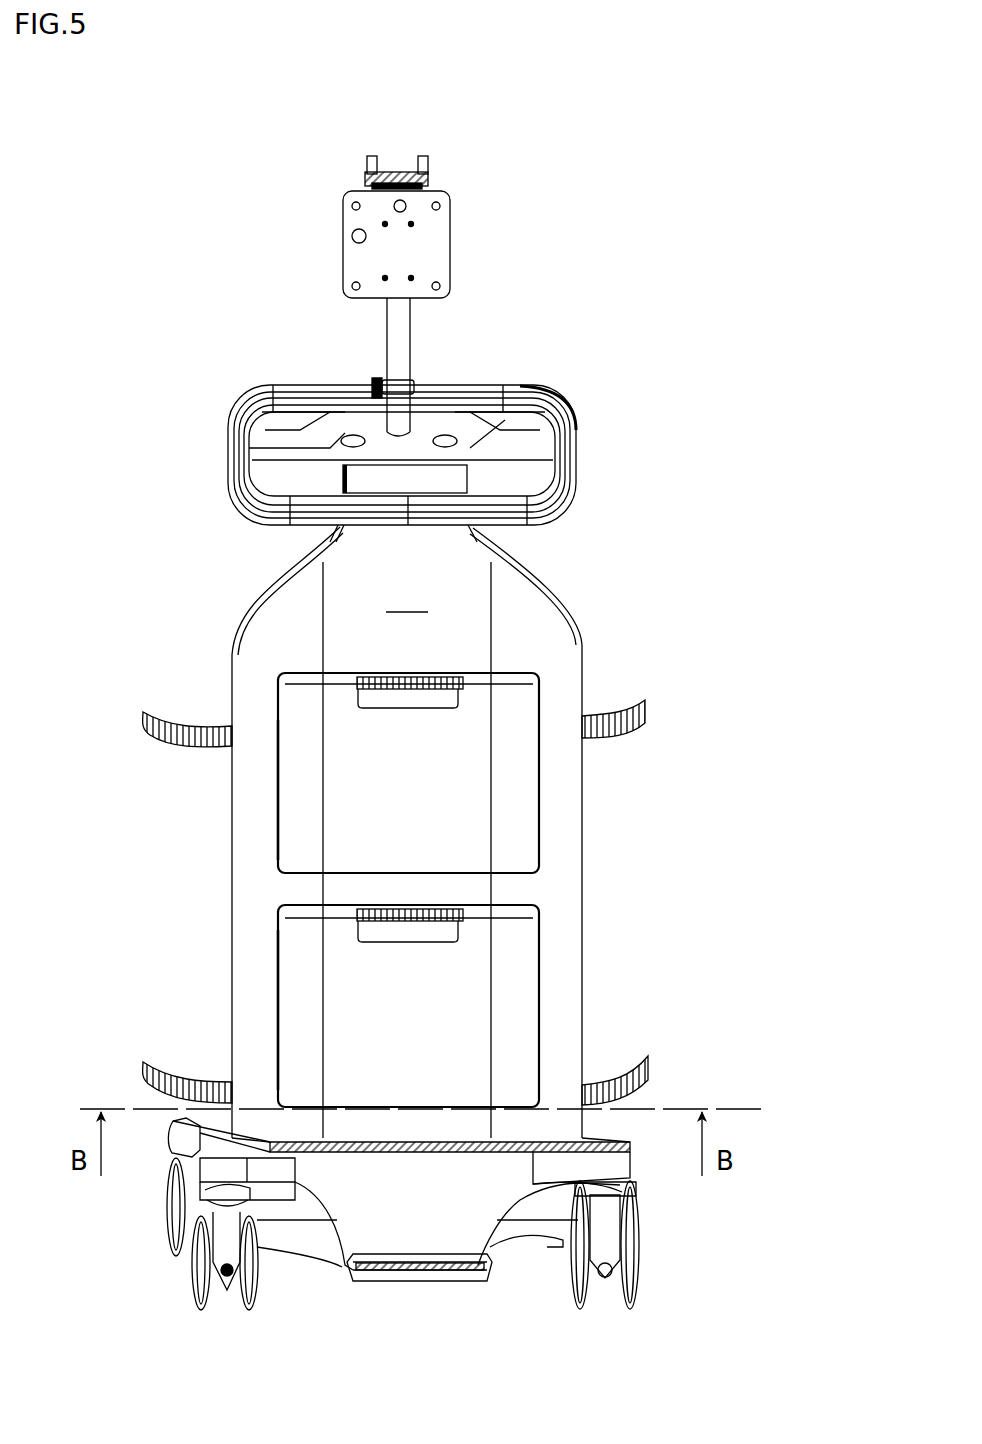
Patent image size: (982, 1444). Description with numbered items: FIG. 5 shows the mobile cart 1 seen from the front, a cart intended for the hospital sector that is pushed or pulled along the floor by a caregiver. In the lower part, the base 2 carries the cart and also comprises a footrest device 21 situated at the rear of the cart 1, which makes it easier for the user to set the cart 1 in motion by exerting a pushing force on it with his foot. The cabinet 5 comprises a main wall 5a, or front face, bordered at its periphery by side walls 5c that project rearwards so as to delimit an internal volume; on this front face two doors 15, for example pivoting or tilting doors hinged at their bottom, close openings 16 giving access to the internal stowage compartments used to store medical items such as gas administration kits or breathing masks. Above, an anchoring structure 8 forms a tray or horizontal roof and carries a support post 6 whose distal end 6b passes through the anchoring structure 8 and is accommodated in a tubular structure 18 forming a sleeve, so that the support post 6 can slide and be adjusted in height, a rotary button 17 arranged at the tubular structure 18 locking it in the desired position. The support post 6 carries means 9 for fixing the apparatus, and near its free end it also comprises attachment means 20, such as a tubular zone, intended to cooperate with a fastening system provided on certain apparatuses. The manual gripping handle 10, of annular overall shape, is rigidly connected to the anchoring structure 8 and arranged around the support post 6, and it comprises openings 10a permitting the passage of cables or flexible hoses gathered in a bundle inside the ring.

The mobile cart 1 is at (714, 256).
The base 2 is at (363, 1208).
The cabinet 5 is at (415, 832).
The main wall 5a is at (407, 597).
The side walls 5c is at (230, 792).
The support post 6 is at (398, 328).
The distal end 6b is at (412, 384).
The anchoring structure 8 is at (335, 420).
The means for fixing the apparatus 9 is at (432, 226).
The manual gripping handle 10 is at (397, 442).
The openings 10a is at (566, 404).
The doors 15 is at (468, 784).
The openings 16 is at (278, 826).
The rotary button 17 is at (377, 384).
The tubular structure 18 is at (428, 414).
The attachment means 20 is at (400, 162).
The footrest device 21 is at (426, 1283).